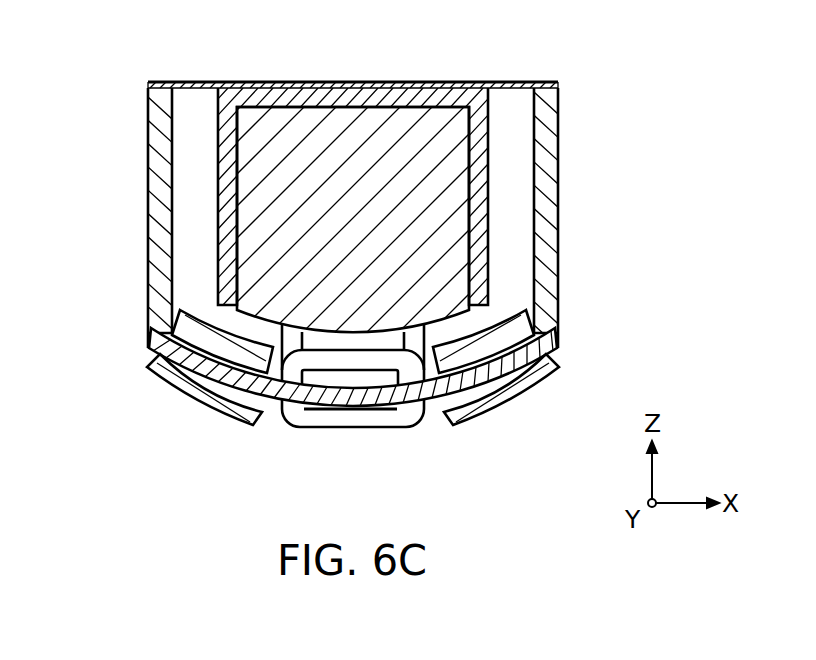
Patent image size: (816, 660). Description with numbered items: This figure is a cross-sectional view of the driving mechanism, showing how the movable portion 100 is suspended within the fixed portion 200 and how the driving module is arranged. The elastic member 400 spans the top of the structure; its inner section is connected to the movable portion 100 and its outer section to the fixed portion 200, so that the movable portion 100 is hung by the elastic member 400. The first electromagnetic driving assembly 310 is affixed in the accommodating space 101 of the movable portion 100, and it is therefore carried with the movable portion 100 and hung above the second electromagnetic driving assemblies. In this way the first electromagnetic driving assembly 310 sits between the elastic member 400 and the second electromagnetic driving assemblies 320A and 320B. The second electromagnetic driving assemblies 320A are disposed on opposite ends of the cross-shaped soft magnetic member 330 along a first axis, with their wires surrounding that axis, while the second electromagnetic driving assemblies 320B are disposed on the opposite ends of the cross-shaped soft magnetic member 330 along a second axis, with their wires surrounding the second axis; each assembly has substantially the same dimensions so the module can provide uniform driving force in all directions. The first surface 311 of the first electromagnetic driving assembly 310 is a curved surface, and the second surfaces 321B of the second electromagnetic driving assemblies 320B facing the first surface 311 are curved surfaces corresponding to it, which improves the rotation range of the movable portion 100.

The movable portion 100 is at (350, 267).
The accommodating space 101 is at (458, 203).
The fixed portion 200 is at (548, 213).
The first electromagnetic driving assembly 310 is at (350, 160).
The first surface 311 is at (448, 378).
The second electromagnetic driving assembly 320A is at (388, 430).
The second electromagnetic driving assembly 320B is at (190, 405).
The second surface 321B is at (205, 312).
The cross-shaped soft magnetic member 330 is at (335, 412).
The elastic member 400 is at (498, 82).